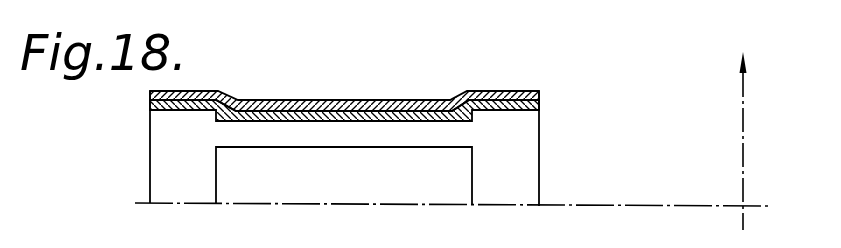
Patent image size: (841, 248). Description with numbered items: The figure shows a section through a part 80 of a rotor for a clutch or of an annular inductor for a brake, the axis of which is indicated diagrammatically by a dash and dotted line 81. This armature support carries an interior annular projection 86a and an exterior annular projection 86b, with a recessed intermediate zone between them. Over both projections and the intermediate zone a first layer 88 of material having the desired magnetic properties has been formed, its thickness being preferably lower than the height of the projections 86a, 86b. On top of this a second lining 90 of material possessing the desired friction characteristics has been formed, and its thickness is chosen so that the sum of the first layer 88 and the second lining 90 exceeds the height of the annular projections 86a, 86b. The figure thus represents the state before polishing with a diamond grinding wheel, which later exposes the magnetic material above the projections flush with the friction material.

The part of a rotor or annular inductor 80 is at (406, 138).
The axis 81 is at (742, 131).
The interior annular projection 86a is at (177, 114).
The exterior annular projection 86b is at (506, 115).
The first layer 88 is at (277, 108).
The second lining 90 is at (348, 104).